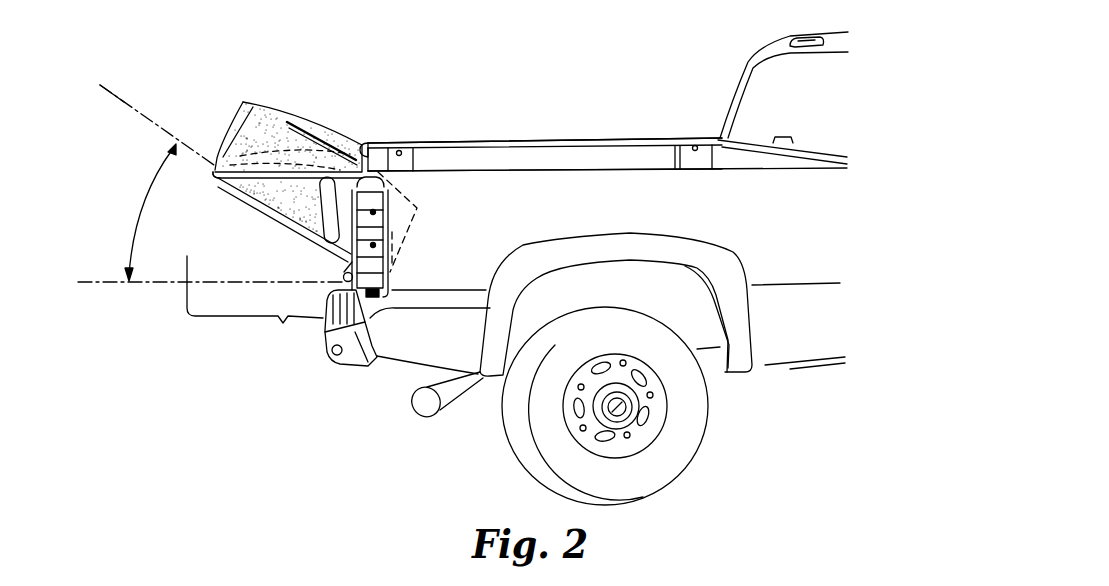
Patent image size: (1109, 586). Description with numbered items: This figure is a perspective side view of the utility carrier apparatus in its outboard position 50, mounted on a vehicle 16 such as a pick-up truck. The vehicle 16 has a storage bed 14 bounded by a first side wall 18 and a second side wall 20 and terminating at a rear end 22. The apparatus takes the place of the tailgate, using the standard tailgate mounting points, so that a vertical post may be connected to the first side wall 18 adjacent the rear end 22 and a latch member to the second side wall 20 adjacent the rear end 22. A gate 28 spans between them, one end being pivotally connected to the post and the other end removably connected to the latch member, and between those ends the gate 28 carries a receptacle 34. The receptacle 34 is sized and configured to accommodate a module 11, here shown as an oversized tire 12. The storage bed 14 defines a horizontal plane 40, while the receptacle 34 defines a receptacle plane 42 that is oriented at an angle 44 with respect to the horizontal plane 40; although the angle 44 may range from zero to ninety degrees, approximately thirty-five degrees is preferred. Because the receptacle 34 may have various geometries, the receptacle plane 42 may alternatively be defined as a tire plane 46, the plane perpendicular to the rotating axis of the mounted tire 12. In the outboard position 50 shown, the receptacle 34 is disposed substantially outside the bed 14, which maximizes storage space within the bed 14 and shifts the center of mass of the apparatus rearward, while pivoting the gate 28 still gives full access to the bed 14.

The module 11 is at (233, 110).
The tire 12 is at (284, 219).
The storage bed 14 is at (493, 155).
The vehicle 16 is at (743, 73).
The first side wall 18 is at (617, 180).
The second side wall 20 is at (557, 138).
The rear end 22 is at (391, 352).
The gate 28 is at (214, 173).
The receptacle 34 is at (213, 156).
The horizontal plane 40 is at (103, 282).
The receptacle plane 42 is at (124, 102).
The angle 44 is at (148, 188).
The tire plane 46 is at (150, 122).
The outboard position 50 is at (255, 305).